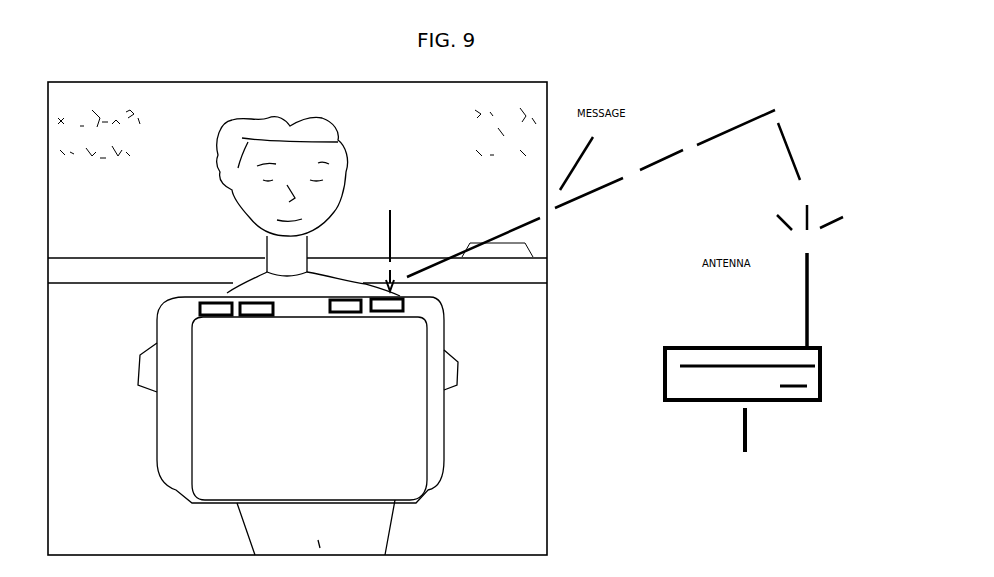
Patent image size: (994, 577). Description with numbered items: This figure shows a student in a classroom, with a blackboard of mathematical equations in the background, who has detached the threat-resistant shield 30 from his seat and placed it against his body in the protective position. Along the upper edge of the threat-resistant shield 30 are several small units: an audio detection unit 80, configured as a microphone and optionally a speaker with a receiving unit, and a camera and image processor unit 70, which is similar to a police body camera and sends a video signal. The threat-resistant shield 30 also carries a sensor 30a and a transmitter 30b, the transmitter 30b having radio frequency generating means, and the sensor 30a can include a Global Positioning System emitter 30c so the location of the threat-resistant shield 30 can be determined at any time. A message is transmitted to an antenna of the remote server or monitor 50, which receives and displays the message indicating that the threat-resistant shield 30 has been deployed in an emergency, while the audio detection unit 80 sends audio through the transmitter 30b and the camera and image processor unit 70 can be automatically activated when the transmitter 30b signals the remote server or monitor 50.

The threat-resistant shield 30 is at (226, 487).
The sensor 30a is at (388, 218).
The transmitter 30b is at (405, 293).
The Global Positioning System (GPS) emitter 30c is at (360, 316).
The remote server or monitor 50 is at (742, 412).
The camera and image processor unit 70 is at (237, 300).
The audio detection unit 80 is at (212, 300).